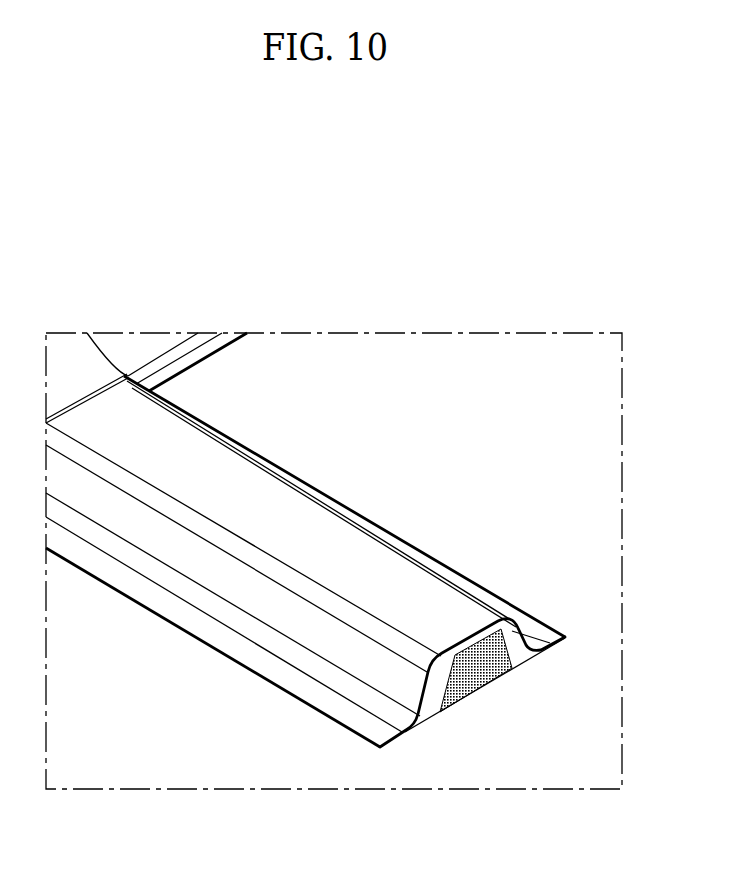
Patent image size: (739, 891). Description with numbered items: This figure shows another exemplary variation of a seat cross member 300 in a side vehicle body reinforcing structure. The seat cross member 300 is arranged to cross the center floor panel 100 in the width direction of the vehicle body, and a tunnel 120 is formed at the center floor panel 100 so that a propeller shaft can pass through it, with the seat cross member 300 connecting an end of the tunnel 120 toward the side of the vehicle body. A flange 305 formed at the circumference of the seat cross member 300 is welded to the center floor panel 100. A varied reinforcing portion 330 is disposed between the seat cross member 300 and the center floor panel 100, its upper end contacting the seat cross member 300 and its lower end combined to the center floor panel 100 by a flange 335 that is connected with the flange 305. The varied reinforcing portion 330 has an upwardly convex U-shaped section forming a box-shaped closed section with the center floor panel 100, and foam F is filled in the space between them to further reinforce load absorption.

The center floor panel 100 is at (150, 728).
The tunnel 120 is at (152, 347).
The seat cross member 300 is at (314, 622).
The flange 305 is at (300, 684).
The varied reinforcing portion 330 is at (522, 636).
The flange 335 is at (420, 719).
The foam F is at (495, 677).